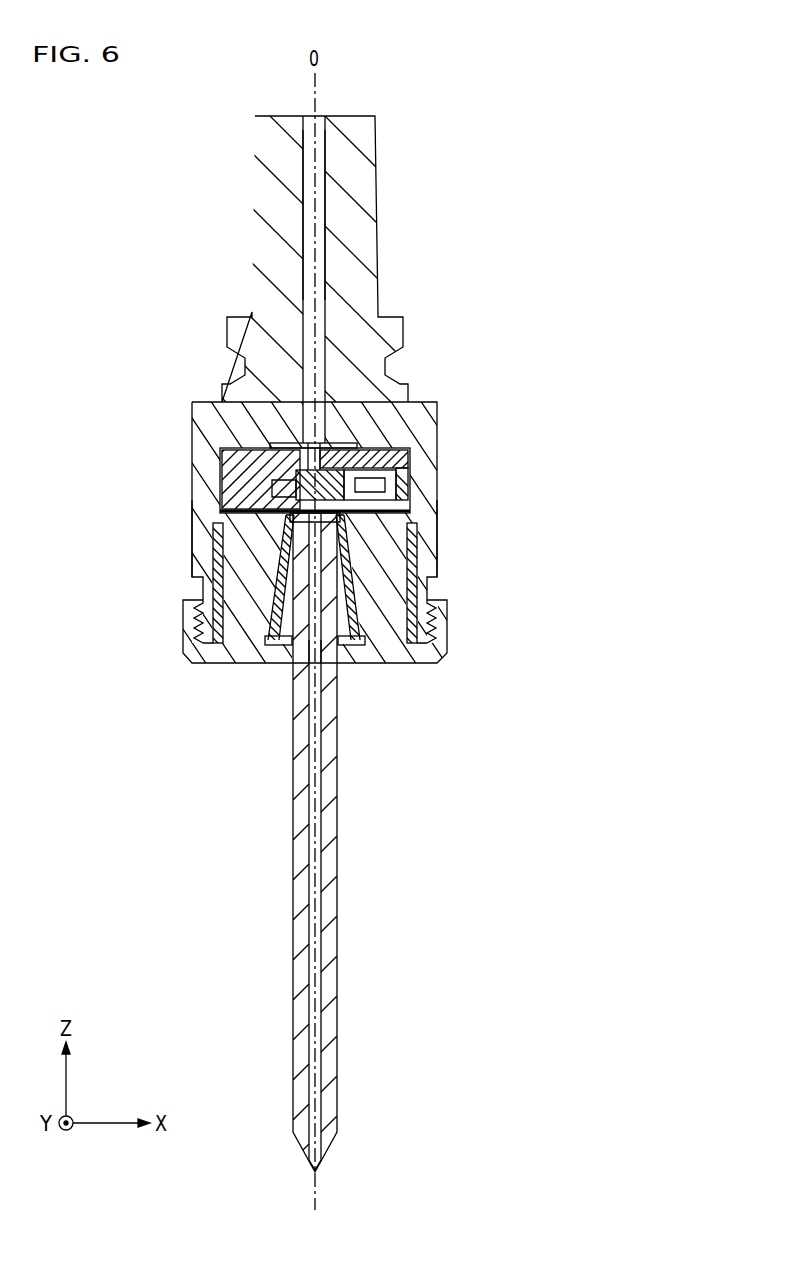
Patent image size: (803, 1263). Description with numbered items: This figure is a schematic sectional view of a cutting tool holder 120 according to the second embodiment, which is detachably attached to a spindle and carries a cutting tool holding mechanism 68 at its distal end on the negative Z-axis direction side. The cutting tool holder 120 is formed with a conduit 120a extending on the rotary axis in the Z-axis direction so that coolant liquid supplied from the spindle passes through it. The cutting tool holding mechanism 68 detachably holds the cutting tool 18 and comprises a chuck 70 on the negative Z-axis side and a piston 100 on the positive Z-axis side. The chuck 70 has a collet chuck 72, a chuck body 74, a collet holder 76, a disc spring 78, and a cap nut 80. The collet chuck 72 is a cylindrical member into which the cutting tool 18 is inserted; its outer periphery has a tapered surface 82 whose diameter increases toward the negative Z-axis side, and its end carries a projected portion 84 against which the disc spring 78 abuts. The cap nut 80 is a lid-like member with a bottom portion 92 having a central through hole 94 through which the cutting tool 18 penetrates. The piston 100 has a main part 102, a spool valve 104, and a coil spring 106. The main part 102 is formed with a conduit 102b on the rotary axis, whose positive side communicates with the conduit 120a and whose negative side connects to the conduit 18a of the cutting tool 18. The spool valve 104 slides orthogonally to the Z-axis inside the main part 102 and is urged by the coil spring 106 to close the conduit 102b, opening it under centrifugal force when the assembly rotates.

The cutting tool 18 is at (336, 925).
The conduit 18a is at (308, 1040).
The cutting tool holding mechanism 68 is at (209, 451).
The chuck 70 is at (208, 538).
The collet chuck 72 is at (280, 600).
The chuck body 74 is at (238, 557).
The collet holder 76 is at (413, 538).
The disc spring 78 is at (292, 636).
The cap nut 80 is at (420, 652).
The tapered surface 82 is at (431, 585).
The projected portion 84 is at (270, 632).
The bottom portion 92 is at (384, 652).
The through hole 94 is at (324, 650).
The piston 100 is at (220, 480).
The main part 102 is at (220, 403).
The conduit 102b is at (272, 446).
The spool valve 104 is at (350, 446).
The coil spring 106 is at (388, 438).
The cutting tool holder 120 is at (397, 189).
The conduit 120a is at (322, 150).